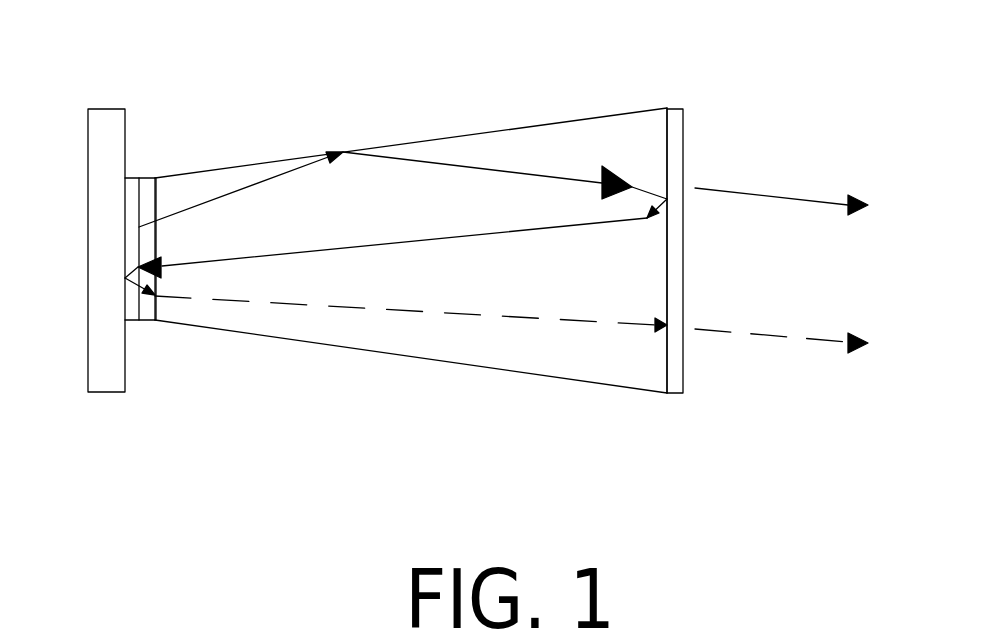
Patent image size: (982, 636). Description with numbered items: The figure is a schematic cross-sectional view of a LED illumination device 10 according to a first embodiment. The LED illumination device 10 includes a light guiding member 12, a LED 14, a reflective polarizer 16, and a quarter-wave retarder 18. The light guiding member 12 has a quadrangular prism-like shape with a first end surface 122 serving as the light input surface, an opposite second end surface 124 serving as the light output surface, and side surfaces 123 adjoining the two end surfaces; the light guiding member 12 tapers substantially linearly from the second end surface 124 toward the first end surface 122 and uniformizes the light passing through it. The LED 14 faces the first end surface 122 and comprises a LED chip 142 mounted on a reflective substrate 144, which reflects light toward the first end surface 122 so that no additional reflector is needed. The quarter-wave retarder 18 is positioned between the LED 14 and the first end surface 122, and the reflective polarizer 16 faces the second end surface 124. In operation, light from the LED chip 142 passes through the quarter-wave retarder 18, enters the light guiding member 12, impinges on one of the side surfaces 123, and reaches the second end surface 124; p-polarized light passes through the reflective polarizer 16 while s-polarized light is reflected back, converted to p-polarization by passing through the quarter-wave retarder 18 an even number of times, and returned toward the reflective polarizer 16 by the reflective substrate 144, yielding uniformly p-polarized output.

The LED illumination device 10 is at (415, 33).
The light guiding member 12 is at (411, 267).
The first end surface 122 is at (157, 195).
The side surfaces 123 is at (475, 370).
The second end surface 124 is at (667, 160).
The LED 14 is at (144, 307).
The LED chip 142 is at (132, 310).
The reflective substrate 144 is at (100, 384).
The reflective polarizer 16 is at (673, 125).
The quarter-wave retarder 18 is at (152, 190).